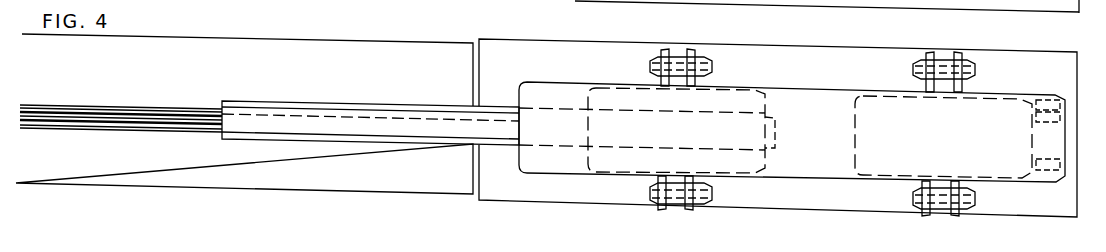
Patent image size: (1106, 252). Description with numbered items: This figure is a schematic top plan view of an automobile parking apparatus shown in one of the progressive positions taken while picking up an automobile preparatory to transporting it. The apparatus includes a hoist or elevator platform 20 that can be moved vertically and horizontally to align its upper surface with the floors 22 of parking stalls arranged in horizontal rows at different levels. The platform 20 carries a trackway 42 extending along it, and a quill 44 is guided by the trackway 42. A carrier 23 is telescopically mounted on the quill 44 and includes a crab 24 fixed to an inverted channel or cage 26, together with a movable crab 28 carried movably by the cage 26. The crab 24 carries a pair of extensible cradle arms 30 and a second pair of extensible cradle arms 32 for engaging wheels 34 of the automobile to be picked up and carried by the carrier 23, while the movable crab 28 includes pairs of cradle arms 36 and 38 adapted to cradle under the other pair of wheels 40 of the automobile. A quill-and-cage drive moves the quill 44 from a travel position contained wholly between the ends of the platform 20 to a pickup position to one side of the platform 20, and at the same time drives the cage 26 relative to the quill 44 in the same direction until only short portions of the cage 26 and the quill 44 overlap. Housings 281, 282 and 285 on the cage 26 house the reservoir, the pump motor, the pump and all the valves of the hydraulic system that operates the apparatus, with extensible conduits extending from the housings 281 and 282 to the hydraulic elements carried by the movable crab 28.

The elevator platform 20 is at (305, 48).
The floors 22 is at (522, 43).
The carrier 23 is at (523, 184).
The crab 24 is at (850, 173).
The cage 26 is at (790, 88).
The movable crab 28 is at (766, 174).
The extensible cradle arms 30 is at (918, 61).
The extensible cradle arms 32 is at (959, 55).
The wheels 34 is at (976, 70).
The cradle arms 36 is at (650, 65).
The cradle arms 38 is at (690, 49).
The wheels 40 is at (712, 70).
The trackway 42 is at (122, 129).
The quill 44 is at (254, 139).
The housing 281 is at (1036, 114).
The housing 282 is at (1036, 162).
The housing 285 is at (1045, 99).